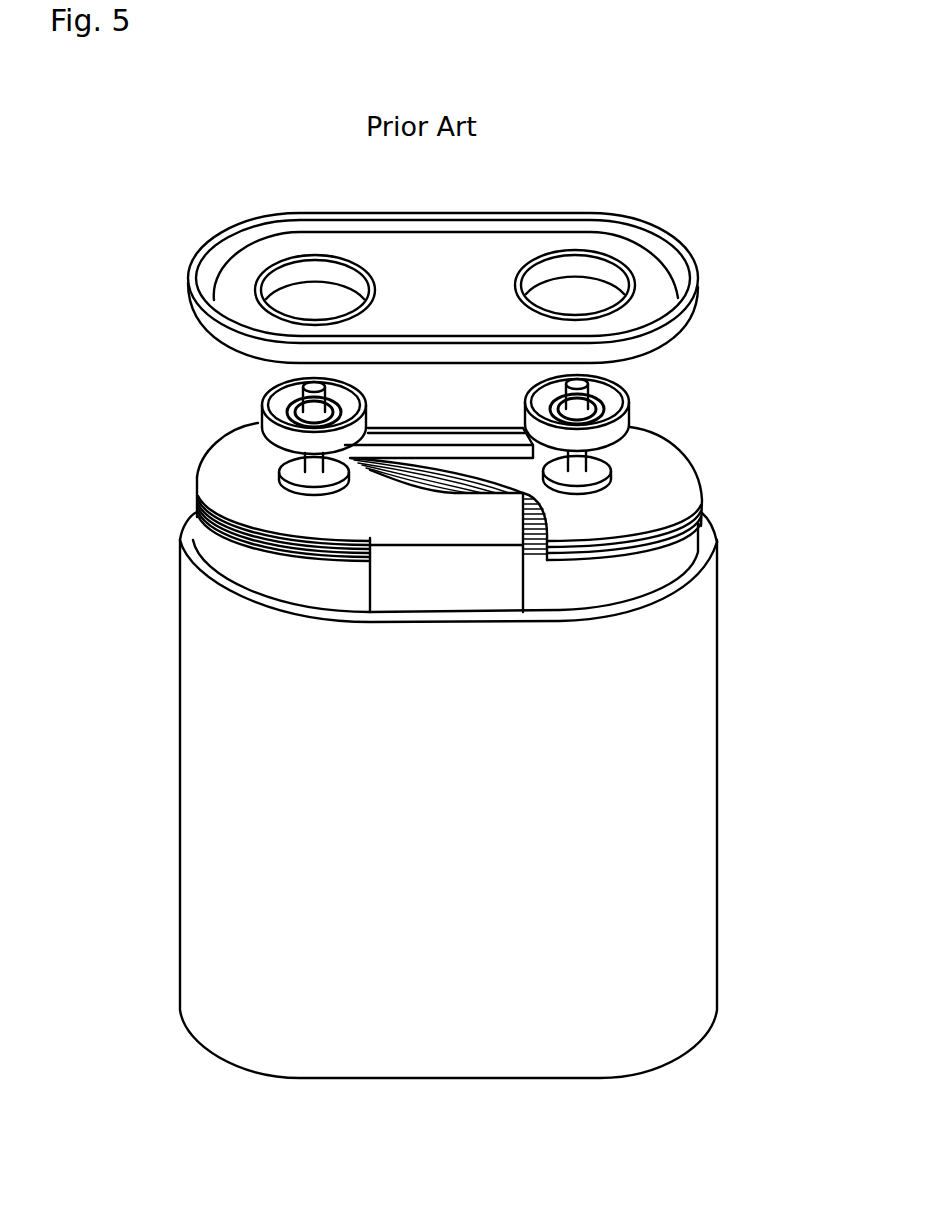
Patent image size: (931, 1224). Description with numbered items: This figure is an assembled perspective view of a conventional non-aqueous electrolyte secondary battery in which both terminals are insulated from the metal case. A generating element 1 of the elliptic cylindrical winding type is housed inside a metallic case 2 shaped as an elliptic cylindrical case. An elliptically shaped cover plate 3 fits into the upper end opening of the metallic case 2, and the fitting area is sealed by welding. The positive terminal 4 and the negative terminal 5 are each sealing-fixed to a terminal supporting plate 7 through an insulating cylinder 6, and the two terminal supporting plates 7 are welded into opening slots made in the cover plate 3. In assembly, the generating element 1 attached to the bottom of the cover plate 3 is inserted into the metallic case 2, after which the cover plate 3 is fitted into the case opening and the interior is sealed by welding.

The generating element 1 is at (597, 593).
The metallic case 2 is at (698, 731).
The cover plate 3 is at (655, 273).
The positive terminal 4 is at (556, 403).
The negative terminal 5 is at (341, 400).
The insulating cylinder 6 is at (285, 405).
The terminal supporting plate 7 is at (267, 409).